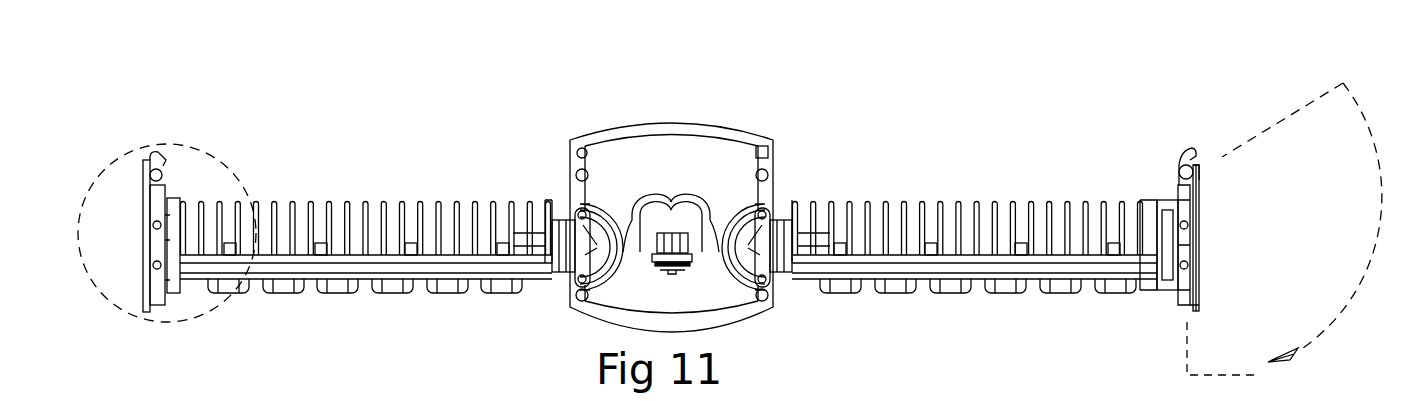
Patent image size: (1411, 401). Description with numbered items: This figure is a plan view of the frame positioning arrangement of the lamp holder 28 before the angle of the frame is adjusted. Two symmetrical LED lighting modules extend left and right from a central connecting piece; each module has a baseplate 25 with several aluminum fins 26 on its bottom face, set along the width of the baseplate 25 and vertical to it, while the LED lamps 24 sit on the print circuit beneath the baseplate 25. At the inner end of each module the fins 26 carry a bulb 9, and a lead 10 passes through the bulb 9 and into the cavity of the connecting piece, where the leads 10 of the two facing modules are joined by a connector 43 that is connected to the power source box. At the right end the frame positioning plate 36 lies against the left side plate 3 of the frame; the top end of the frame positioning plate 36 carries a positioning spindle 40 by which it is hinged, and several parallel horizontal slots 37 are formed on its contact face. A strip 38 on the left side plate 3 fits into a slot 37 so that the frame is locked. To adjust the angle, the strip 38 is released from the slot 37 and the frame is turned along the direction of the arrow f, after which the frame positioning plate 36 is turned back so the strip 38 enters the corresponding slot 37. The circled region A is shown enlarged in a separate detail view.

The left side plate 3 is at (1200, 253).
The bulb 9 is at (578, 215).
The lead 10 is at (633, 205).
The LED lamp 24 is at (342, 286).
The baseplate 25 is at (260, 272).
The fins 26 is at (362, 207).
The lamp holder 28 is at (770, 192).
The frame positioning plate 36 is at (1200, 212).
The slot 37 is at (1207, 167).
The strip 38 is at (1177, 190).
The positioning spindle 40 is at (1183, 192).
The connector 43 is at (674, 242).
The Part A is at (202, 148).
The rotation direction f is at (1284, 234).